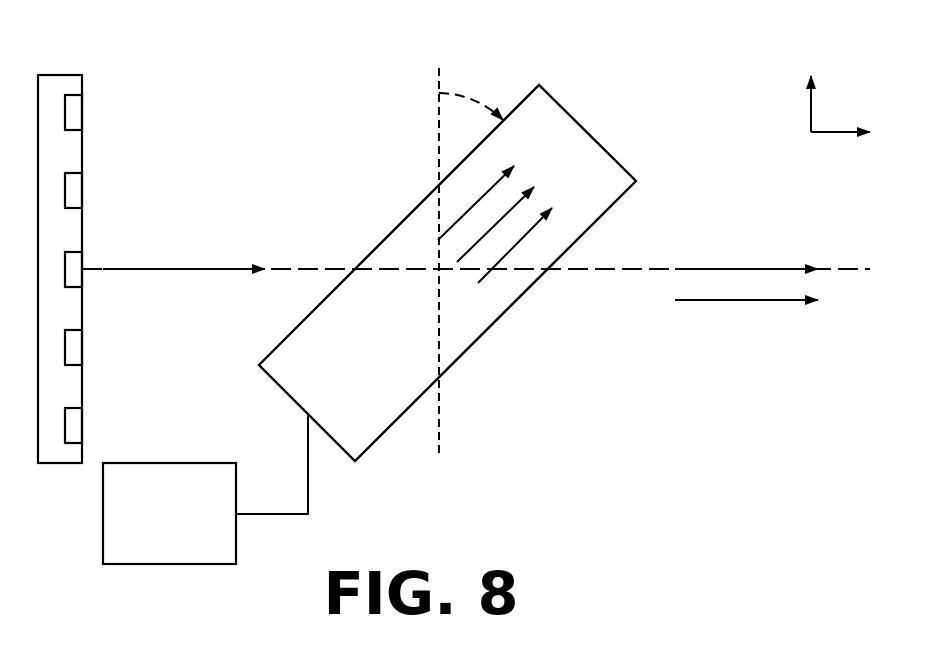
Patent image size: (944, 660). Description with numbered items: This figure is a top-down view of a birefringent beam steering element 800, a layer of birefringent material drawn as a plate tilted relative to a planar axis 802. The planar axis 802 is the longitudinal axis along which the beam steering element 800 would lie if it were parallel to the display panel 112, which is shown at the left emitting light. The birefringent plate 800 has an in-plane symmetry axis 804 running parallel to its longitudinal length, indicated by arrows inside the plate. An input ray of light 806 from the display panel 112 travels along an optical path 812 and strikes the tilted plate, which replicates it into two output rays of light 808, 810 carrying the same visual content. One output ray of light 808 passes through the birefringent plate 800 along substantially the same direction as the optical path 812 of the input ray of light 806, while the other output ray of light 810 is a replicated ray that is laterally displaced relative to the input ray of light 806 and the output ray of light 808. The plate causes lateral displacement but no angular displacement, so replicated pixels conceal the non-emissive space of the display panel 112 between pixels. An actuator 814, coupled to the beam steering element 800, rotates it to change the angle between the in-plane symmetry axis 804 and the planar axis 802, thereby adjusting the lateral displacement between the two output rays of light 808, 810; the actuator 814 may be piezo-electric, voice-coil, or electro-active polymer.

The display panel 112 is at (54, 74).
The beam steering element 800 is at (376, 57).
The planar axis 802 is at (447, 279).
The in-plane symmetry axis 804 is at (458, 220).
The input ray of light 806 is at (190, 282).
The output ray of light 808 is at (740, 266).
The output ray of light 810 is at (740, 306).
The optical path 812 is at (280, 267).
The actuator 814 is at (205, 489).